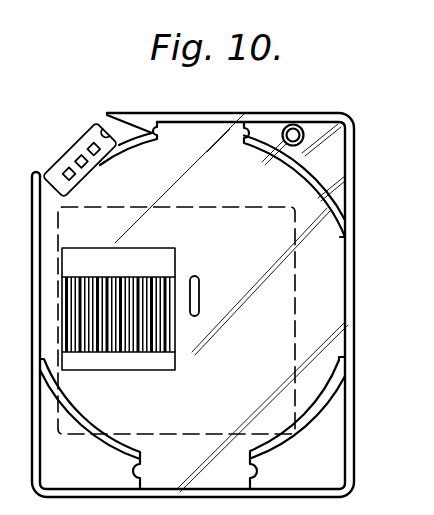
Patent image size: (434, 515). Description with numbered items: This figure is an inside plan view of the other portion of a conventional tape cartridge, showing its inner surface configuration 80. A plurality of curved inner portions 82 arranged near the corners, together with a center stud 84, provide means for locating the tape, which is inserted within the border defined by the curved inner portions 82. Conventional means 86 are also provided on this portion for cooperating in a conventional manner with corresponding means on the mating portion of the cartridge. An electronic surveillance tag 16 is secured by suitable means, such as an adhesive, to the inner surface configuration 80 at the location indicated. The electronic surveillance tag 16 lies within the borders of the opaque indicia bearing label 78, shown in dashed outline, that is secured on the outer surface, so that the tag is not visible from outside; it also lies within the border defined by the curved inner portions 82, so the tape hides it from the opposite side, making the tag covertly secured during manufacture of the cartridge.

The electronic surveillance tag 16 is at (137, 364).
The opaque indicia bearing label 78 is at (282, 330).
The inner surface configuration 80 is at (336, 297).
The curved inner portions 82 is at (133, 146).
The center stud 84 is at (200, 280).
The conventional means 86 is at (69, 142).